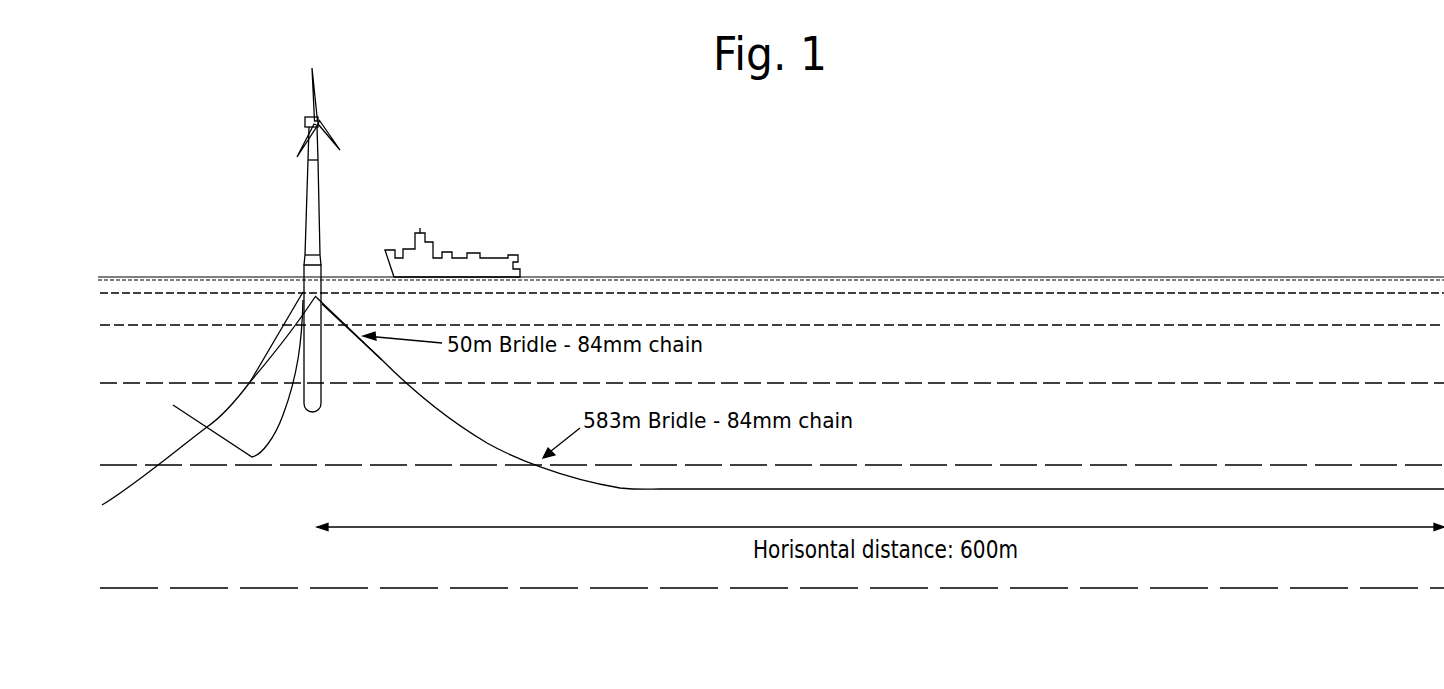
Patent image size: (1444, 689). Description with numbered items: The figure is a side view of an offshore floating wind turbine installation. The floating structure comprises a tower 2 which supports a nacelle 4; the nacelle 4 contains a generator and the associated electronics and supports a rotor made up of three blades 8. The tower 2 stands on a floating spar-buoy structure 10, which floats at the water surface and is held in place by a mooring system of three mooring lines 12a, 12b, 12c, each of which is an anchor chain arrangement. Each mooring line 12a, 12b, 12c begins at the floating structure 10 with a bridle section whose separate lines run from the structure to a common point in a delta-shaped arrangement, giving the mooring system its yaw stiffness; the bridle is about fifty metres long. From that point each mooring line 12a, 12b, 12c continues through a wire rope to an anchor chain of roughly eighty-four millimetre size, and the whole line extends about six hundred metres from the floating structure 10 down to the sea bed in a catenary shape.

The tower 2 is at (307, 205).
The nacelle 4 is at (305, 119).
The blades 8 is at (321, 92).
The floating spar-buoy structure 10 is at (308, 283).
The mooring line 12a is at (297, 372).
The mooring line 12b is at (173, 451).
The mooring line 12c is at (483, 438).